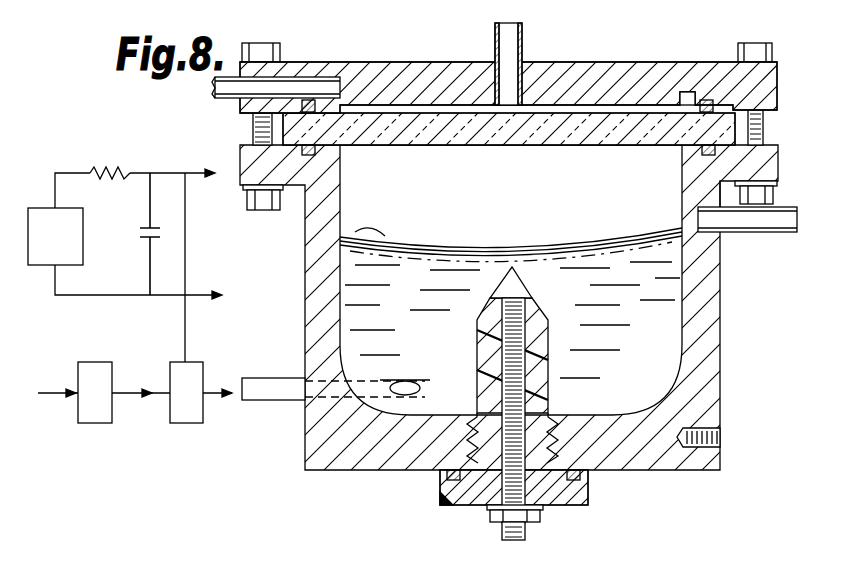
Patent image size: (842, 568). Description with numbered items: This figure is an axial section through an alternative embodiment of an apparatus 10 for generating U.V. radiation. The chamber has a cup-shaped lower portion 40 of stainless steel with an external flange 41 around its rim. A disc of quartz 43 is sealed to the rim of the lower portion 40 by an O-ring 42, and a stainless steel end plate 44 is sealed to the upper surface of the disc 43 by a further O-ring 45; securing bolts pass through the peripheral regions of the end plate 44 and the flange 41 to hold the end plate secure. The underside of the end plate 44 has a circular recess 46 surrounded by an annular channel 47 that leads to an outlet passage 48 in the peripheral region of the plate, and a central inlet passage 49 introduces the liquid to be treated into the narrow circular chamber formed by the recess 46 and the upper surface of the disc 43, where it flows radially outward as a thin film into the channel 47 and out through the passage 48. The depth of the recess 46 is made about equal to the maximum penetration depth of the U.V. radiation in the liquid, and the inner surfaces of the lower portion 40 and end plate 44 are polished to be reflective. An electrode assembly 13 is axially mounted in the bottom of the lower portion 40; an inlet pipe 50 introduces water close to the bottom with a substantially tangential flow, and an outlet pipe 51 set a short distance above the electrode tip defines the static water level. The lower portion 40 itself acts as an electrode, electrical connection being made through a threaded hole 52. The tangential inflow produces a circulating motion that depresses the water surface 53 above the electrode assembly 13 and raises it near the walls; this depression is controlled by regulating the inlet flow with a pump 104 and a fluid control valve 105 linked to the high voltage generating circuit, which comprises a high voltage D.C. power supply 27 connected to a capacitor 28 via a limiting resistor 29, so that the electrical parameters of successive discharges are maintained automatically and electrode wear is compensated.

The liquid level sensing apparatus 10 is at (743, 292).
The electrode assembly 13 is at (464, 511).
The high voltage D.C. power supply 27 is at (78, 240).
The capacitor 28 is at (146, 238).
The limiting resistor 29 is at (120, 171).
The cup-shaped lower portion 40 is at (700, 378).
The external flange 41 is at (760, 162).
The O-ring 42 is at (318, 150).
The disc of quartz 43 is at (292, 127).
The end plate 44 is at (653, 72).
The O-ring 45 is at (710, 100).
The circular recess 46 is at (415, 106).
The annular channel 47 is at (689, 94).
The outlet passage 48 is at (306, 85).
The central inlet passage 49 is at (505, 98).
The inlet pipe 50 is at (284, 401).
The outlet pipe 51 is at (777, 210).
The threaded hole 52 is at (720, 440).
The water surface 53 is at (358, 237).
The pump 104 is at (97, 372).
The fluid control valve 105 is at (195, 372).